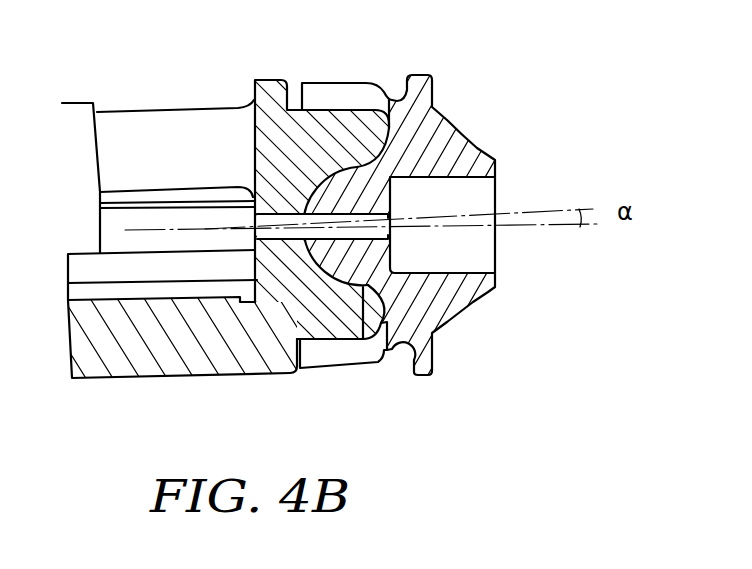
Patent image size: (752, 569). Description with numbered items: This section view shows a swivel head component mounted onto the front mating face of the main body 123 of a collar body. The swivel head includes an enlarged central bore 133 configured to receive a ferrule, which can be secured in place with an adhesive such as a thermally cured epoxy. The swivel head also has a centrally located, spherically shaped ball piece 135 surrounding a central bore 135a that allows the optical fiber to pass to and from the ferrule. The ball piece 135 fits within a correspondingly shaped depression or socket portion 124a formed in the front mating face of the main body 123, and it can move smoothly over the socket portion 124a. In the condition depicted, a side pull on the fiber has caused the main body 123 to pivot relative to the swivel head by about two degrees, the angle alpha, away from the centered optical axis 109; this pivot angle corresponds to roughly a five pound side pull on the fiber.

The main body 123 is at (78, 103).
The socket portion 124a is at (340, 167).
The ball piece 135 is at (338, 250).
The central bore 135a is at (347, 232).
The enlarged central bore 133 is at (483, 252).
The centered optical axis 109 is at (563, 228).